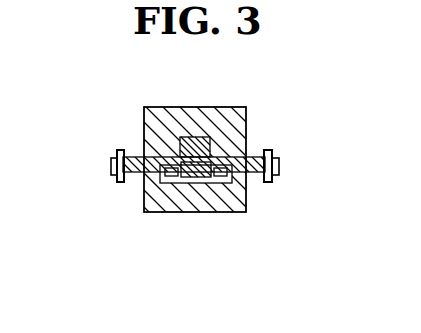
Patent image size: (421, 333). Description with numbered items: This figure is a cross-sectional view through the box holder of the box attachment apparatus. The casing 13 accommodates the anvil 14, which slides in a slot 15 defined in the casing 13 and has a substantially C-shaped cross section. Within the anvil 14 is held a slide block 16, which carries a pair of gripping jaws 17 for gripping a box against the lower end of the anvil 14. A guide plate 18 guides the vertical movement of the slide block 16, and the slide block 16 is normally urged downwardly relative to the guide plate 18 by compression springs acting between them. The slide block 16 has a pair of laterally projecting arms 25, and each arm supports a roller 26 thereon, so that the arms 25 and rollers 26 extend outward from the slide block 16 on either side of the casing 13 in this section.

The casing 13 is at (238, 125).
The anvil 14 is at (200, 142).
The slot 15 is at (176, 140).
The slide block 16 is at (142, 155).
The gripping jaws 17 is at (172, 183).
The guide plate 18 is at (195, 187).
The laterally projecting arms 25 is at (135, 176).
The roller 26 is at (115, 153).